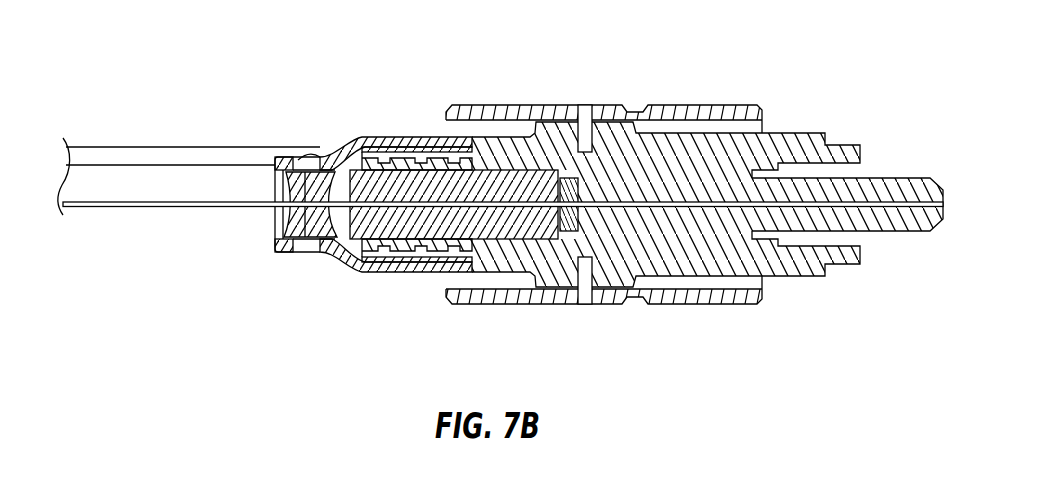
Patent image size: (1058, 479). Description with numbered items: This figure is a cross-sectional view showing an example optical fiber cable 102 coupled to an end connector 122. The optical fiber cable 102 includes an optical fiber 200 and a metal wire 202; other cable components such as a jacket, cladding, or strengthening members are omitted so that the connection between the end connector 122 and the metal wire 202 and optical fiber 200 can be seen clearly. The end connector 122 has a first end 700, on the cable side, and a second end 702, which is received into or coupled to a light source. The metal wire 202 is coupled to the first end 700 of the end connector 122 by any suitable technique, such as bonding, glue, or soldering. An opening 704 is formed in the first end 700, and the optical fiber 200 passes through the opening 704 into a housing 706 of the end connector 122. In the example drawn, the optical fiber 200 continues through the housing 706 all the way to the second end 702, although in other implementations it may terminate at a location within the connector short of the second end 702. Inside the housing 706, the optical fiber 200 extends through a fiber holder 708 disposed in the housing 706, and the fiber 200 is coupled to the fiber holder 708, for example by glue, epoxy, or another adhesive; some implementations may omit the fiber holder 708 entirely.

The optical fiber cable 102 is at (93, 132).
The metal wire 202 is at (183, 145).
The optical fiber 200 is at (140, 208).
The first end 700 is at (282, 257).
The opening 704 is at (278, 221).
The fiber holder 708 is at (475, 172).
The end connector 122 is at (592, 92).
The housing 706 is at (792, 132).
The second end 702 is at (895, 177).